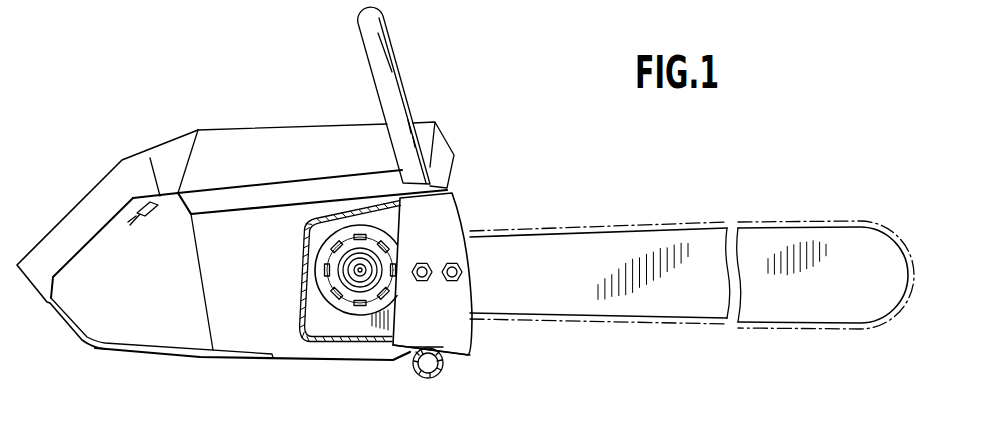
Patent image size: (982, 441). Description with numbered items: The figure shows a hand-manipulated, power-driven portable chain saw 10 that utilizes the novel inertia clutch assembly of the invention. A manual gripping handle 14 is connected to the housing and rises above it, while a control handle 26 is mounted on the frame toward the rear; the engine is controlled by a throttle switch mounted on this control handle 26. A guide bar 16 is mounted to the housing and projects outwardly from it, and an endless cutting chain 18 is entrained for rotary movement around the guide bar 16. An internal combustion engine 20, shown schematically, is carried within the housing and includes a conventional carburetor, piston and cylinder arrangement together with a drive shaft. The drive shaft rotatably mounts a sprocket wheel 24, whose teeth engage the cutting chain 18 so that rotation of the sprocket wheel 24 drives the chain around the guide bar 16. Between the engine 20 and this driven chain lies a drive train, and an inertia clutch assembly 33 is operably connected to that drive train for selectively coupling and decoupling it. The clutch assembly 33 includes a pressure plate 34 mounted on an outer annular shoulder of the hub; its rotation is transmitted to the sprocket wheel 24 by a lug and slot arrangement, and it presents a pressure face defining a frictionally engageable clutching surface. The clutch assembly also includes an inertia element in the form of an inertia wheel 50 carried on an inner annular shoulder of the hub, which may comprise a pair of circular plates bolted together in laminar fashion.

The chain saw 10 is at (457, 164).
The manual gripping handle 14 is at (390, 72).
The guide bar 16 is at (607, 305).
The endless cutting chain 18 is at (623, 224).
The internal combustion engine 20 is at (317, 322).
The sprocket wheel 24 is at (137, 214).
The control handle 26 is at (80, 218).
The inertia clutch assembly 33 is at (340, 223).
The pressure plate 34 is at (380, 233).
The inertia wheel 50 is at (377, 293).